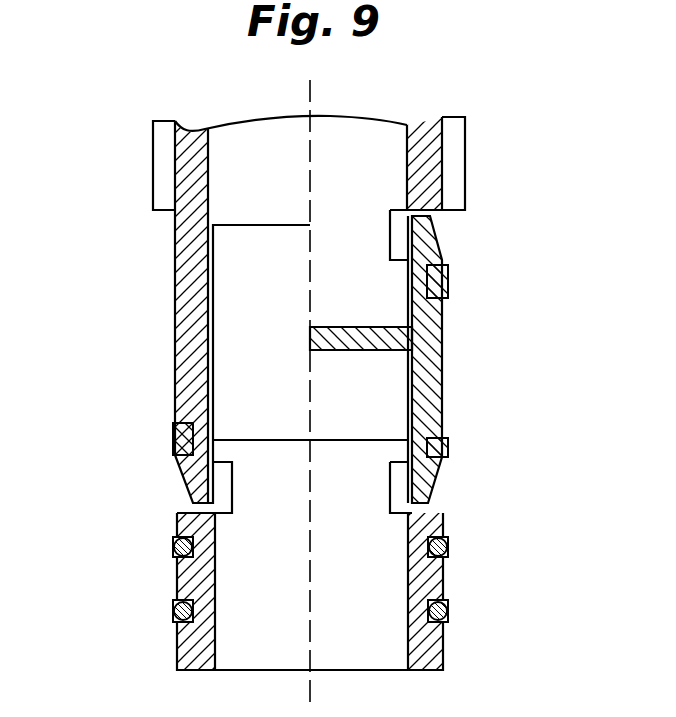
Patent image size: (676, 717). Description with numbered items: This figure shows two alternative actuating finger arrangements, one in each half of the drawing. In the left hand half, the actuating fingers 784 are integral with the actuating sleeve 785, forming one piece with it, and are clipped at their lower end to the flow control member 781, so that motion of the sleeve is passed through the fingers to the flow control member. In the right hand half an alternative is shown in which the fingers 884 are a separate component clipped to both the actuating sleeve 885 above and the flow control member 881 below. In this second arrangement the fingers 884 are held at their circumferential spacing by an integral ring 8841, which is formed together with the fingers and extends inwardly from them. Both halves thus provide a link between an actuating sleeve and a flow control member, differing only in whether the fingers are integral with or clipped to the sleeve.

The actuating sleeve 785 is at (178, 182).
The actuating fingers 784 is at (188, 338).
The actuating sleeve 885 is at (443, 162).
The fingers 884 is at (428, 408).
The integral ring 8841 is at (343, 340).
The flow control member 781 is at (193, 580).
The flow control member 881 is at (444, 583).